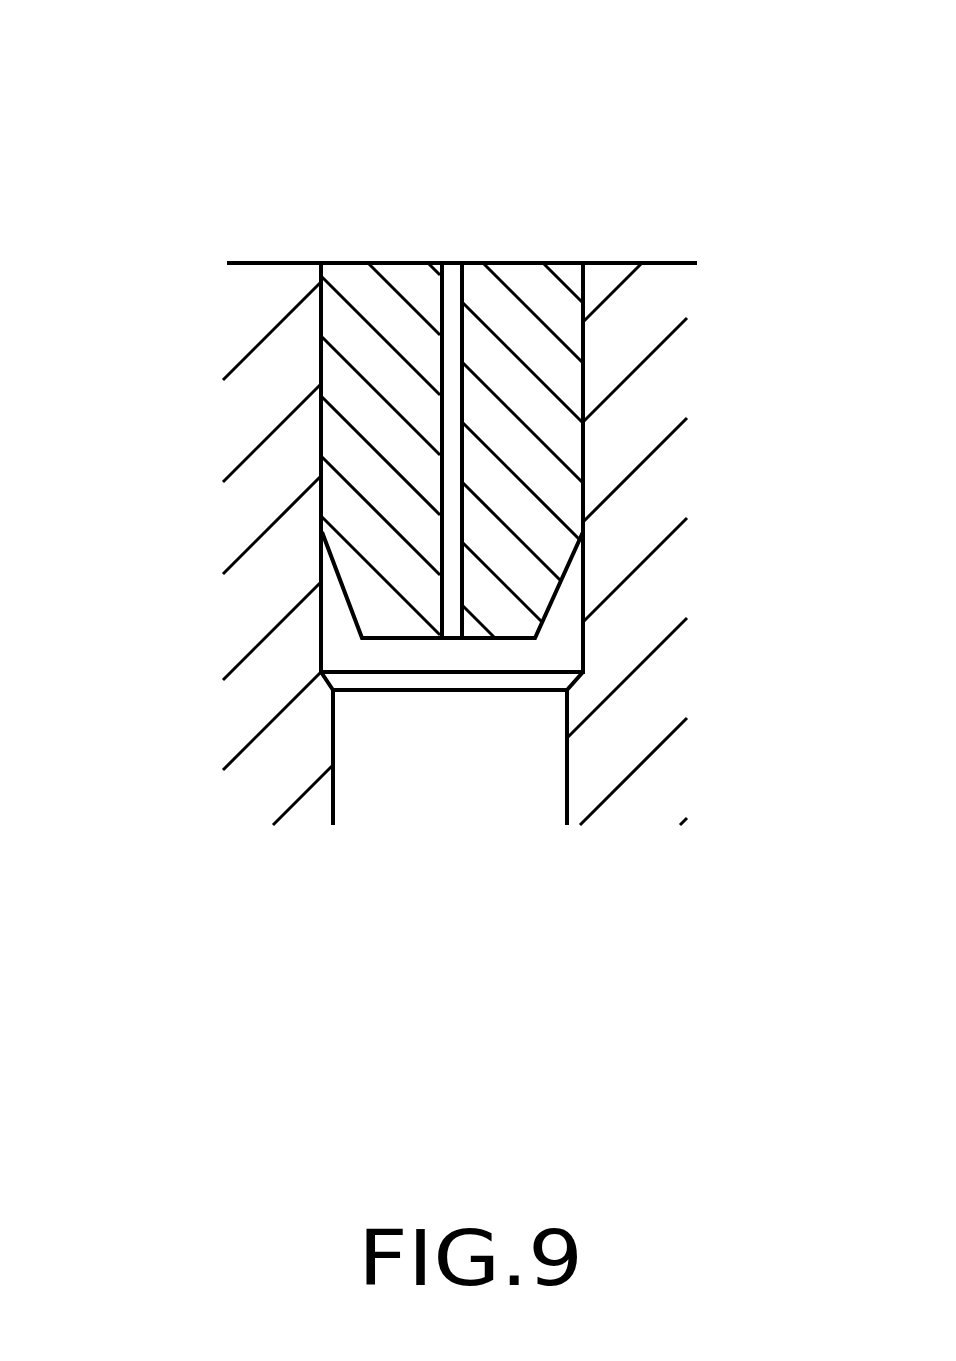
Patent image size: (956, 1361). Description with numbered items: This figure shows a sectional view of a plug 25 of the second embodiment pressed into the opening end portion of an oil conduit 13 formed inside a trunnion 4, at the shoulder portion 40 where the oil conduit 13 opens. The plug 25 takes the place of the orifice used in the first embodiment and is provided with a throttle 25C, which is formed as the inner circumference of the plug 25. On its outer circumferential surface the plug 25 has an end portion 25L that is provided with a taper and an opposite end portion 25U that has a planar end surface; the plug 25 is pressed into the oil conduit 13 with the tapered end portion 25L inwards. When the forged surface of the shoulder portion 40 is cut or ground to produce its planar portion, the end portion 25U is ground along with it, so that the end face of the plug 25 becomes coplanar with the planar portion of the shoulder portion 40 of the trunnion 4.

The trunnion 4 is at (172, 600).
The shoulder portion 40 is at (257, 262).
The oil conduit 13 is at (336, 781).
The plug 25 is at (368, 247).
The end portion 25U is at (418, 263).
The throttle 25C is at (455, 446).
The end portion 25L is at (390, 645).